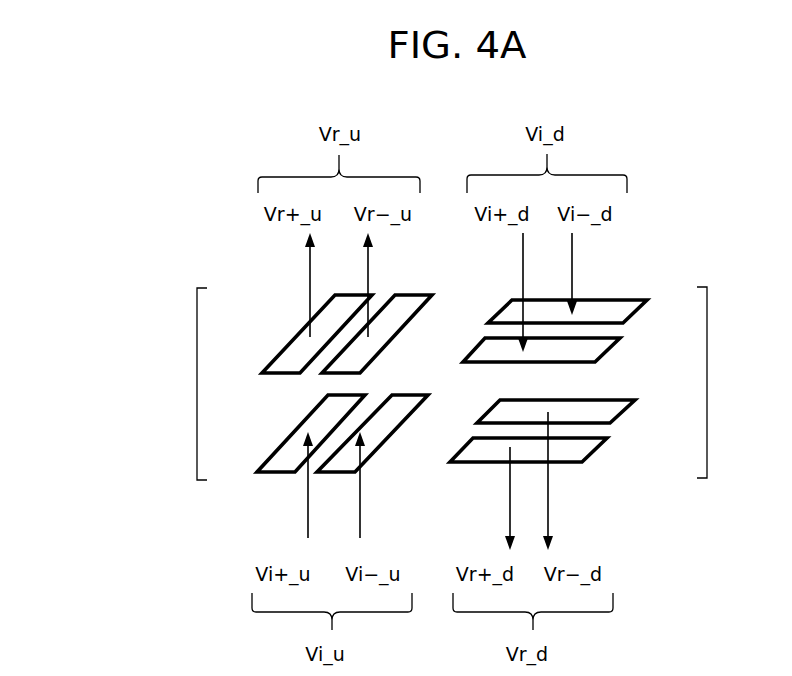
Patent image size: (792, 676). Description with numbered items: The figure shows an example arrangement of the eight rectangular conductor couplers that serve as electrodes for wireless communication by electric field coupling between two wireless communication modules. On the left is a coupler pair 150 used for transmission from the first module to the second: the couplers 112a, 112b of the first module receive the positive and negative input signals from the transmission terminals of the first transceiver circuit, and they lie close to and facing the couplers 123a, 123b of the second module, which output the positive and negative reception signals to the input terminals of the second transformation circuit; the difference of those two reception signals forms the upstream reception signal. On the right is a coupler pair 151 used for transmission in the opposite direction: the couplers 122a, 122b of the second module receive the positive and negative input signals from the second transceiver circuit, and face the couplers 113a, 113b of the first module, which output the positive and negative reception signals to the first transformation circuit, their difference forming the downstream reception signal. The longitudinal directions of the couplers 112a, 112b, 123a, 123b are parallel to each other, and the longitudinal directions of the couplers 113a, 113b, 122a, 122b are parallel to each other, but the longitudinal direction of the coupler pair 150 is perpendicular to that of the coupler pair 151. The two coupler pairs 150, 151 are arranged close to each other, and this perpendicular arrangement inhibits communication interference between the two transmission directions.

The coupler pair 150 is at (197, 385).
The coupler pair 151 is at (707, 382).
The coupler 123a is at (297, 335).
The coupler 123b is at (397, 333).
The coupler 122a is at (477, 346).
The coupler 122b is at (631, 314).
The coupler 112a is at (289, 437).
The coupler 112b is at (388, 437).
The coupler 113a is at (456, 456).
The coupler 113b is at (627, 408).